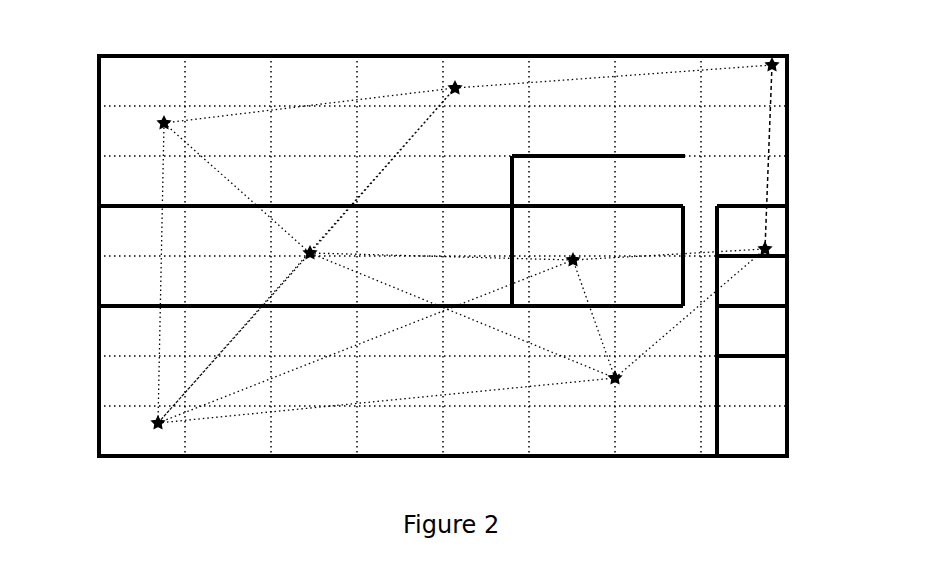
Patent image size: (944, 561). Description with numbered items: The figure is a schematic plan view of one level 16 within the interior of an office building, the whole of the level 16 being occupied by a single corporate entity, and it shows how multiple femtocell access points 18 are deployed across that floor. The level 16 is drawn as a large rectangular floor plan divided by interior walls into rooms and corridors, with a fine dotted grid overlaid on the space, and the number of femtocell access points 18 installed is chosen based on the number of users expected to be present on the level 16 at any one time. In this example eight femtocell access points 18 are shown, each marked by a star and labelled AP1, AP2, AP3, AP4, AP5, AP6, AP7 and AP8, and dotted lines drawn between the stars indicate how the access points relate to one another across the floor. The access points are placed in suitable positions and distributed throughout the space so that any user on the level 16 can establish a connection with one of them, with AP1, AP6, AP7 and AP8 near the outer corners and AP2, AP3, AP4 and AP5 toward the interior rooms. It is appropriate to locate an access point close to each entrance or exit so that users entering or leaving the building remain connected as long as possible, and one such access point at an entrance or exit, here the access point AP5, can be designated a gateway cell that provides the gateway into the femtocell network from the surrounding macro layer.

The level 16 is at (788, 132).
The femtocell access points 18 is at (416, 235).
The femtocell access point AP1 is at (154, 436).
The femtocell access point AP2 is at (627, 394).
The femtocell access point AP3 is at (761, 265).
The femtocell access point AP4 is at (584, 276).
The gateway femtocell access point AP5 is at (321, 268).
The femtocell access point AP6 is at (154, 138).
The femtocell access point AP7 is at (468, 104).
The femtocell access point AP8 is at (749, 78).